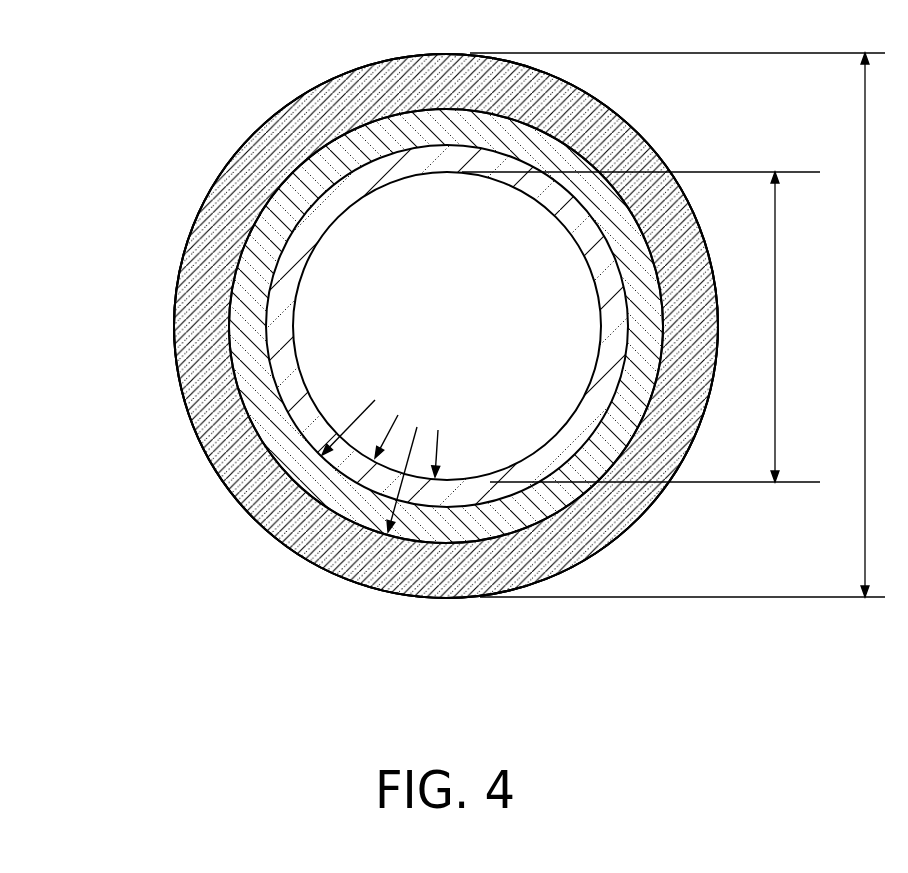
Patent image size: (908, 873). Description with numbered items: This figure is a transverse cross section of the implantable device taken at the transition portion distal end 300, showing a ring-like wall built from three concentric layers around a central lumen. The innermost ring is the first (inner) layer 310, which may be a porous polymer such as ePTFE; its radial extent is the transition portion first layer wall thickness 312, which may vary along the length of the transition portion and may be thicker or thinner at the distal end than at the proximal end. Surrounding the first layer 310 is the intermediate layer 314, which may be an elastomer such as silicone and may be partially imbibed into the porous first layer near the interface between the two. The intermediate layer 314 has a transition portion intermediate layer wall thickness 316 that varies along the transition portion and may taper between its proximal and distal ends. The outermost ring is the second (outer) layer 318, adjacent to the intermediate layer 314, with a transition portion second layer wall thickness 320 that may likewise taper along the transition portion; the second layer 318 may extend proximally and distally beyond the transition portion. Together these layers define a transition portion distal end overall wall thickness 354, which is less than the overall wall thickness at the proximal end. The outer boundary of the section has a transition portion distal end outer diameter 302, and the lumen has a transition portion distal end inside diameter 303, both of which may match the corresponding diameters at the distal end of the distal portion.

The transition portion distal end 300 is at (202, 124).
The transition portion distal end outer diameter 302 is at (678, 325).
The transition portion distal end inside diameter 303 is at (641, 327).
The first (inner) layer 310 is at (263, 328).
The transition portion first layer wall thickness 312 is at (348, 507).
The intermediate layer 314 is at (252, 433).
The transition portion intermediate layer wall thickness 316 is at (282, 491).
The second (outer) layer 318 is at (238, 502).
The transition portion second layer wall thickness 320 is at (365, 606).
The transition portion distal end overall wall thickness 354 is at (422, 609).